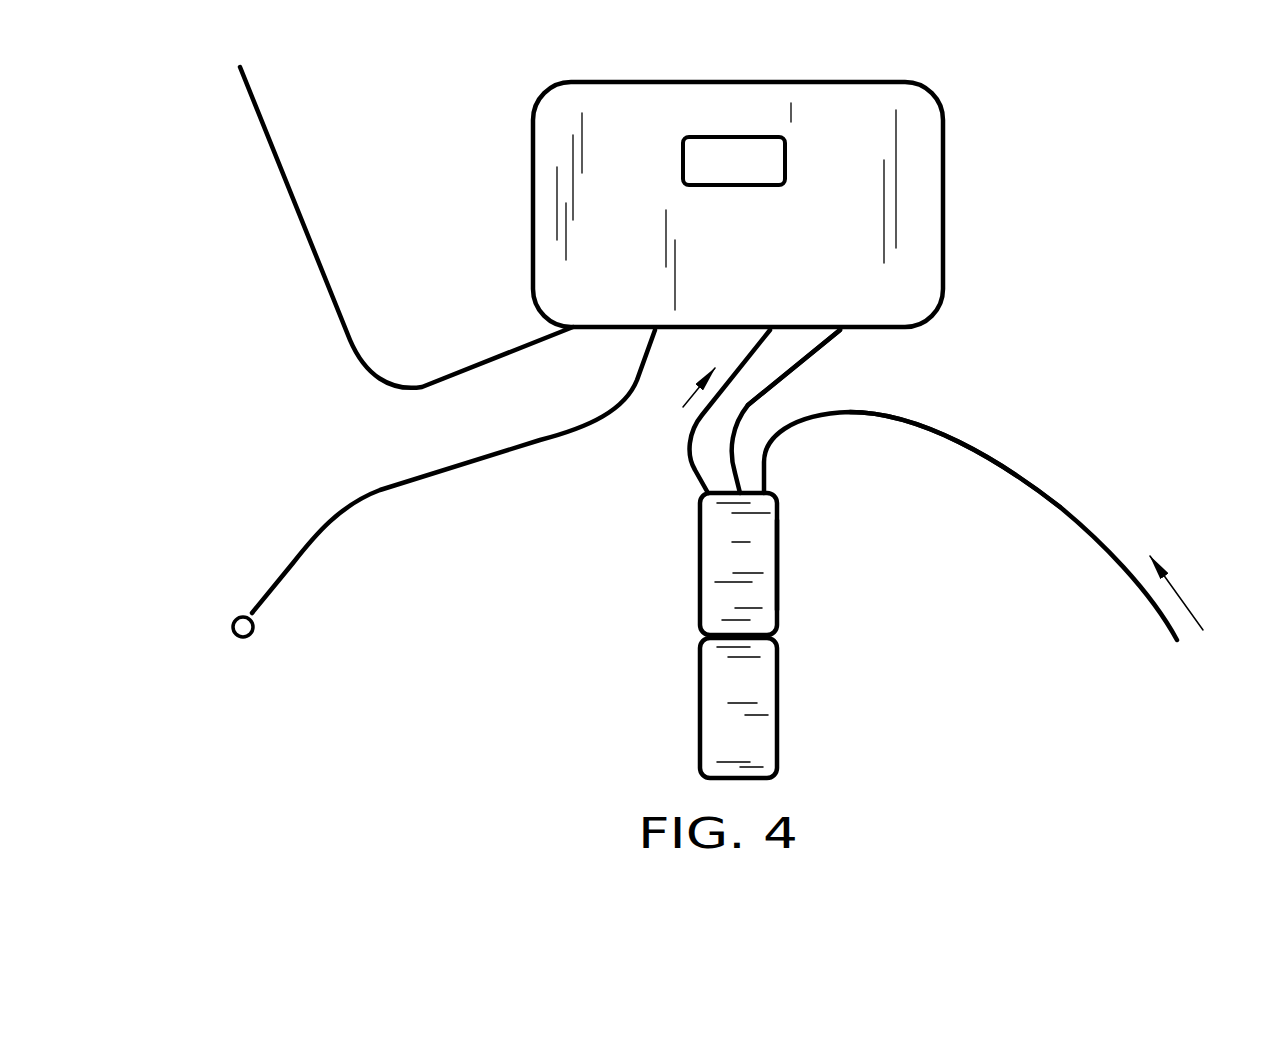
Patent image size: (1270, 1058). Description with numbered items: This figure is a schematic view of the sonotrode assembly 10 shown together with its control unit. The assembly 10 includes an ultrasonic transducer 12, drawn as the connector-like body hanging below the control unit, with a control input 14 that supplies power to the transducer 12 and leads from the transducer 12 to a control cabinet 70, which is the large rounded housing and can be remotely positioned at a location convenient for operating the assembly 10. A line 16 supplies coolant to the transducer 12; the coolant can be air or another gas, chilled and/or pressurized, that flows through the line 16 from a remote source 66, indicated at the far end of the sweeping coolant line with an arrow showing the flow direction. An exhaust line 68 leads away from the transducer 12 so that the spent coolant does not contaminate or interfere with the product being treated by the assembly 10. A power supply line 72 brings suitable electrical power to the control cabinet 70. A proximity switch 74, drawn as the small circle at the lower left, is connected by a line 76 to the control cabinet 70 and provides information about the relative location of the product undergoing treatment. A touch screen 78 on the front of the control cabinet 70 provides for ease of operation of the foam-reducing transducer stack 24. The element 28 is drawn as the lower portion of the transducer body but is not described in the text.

The sonotrode assembly 10 is at (1003, 58).
The ultrasonic transducer 12 is at (778, 527).
The control input 14 is at (803, 363).
The line 16 is at (978, 463).
The foam-reducing transducer stack 24 is at (788, 564).
The second connector 28 is at (700, 695).
The remote source 66 is at (1152, 598).
The exhaust line 68 is at (687, 437).
The control cabinet 70 is at (918, 193).
The power supply line 72 is at (305, 220).
The proximity switch 74 is at (232, 633).
The line 76 is at (383, 492).
The touch screen 78 is at (743, 173).